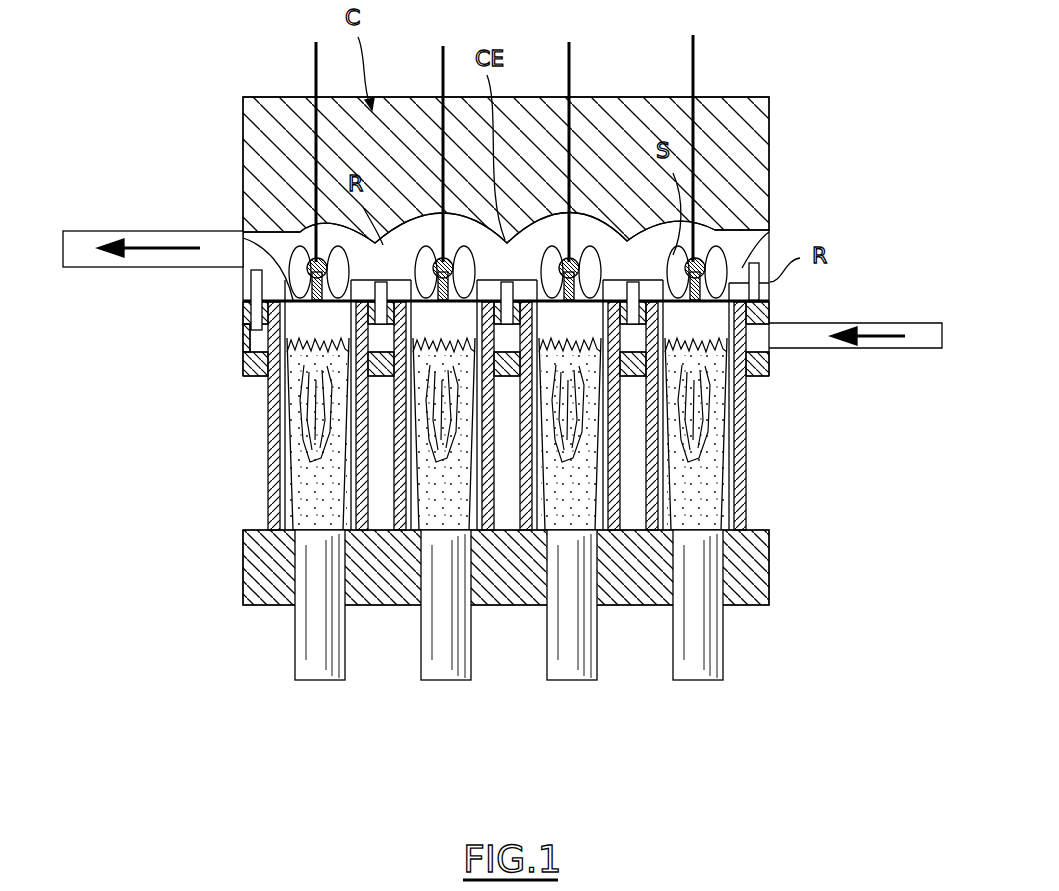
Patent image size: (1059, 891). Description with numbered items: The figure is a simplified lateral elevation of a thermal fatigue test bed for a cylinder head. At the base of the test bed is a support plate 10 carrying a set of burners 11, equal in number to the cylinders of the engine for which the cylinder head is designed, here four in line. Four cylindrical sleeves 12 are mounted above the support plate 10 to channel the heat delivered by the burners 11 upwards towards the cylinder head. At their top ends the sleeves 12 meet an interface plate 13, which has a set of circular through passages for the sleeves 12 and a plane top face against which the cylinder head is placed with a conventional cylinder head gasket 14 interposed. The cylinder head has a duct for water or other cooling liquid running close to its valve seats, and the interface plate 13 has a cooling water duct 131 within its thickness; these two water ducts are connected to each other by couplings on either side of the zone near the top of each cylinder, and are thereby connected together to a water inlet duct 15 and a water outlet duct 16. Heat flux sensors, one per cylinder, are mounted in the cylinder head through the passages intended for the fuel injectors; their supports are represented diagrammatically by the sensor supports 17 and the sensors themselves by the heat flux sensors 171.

The support plate 10 is at (756, 607).
The burners 11 is at (320, 667).
The cylindrical sleeves 12 is at (268, 462).
The interface plate 13 is at (243, 362).
The cylinder head gasket 14 is at (742, 268).
The water inlet duct 15 is at (820, 330).
The water outlet duct 16 is at (153, 267).
The sensor supports 17 is at (313, 158).
The cooling water duct 131 is at (662, 345).
The heat flux sensors 171 is at (243, 232).